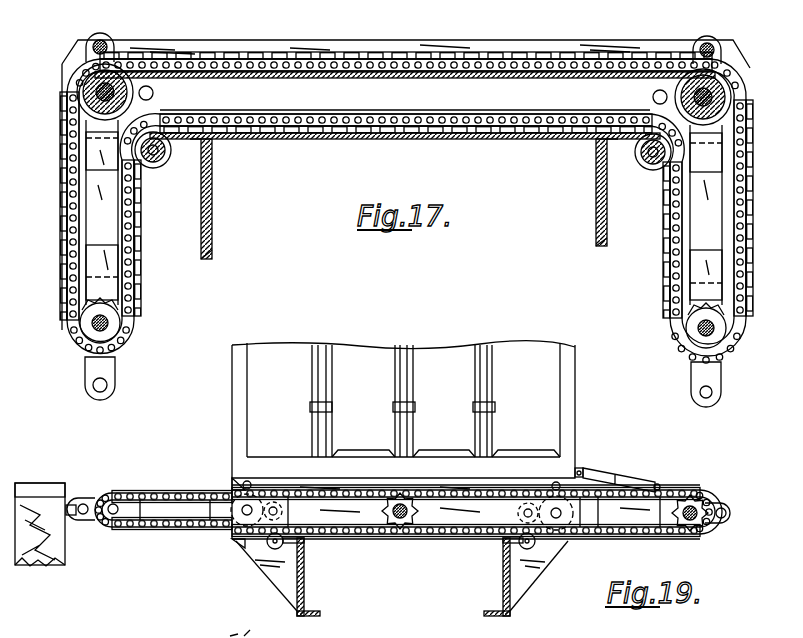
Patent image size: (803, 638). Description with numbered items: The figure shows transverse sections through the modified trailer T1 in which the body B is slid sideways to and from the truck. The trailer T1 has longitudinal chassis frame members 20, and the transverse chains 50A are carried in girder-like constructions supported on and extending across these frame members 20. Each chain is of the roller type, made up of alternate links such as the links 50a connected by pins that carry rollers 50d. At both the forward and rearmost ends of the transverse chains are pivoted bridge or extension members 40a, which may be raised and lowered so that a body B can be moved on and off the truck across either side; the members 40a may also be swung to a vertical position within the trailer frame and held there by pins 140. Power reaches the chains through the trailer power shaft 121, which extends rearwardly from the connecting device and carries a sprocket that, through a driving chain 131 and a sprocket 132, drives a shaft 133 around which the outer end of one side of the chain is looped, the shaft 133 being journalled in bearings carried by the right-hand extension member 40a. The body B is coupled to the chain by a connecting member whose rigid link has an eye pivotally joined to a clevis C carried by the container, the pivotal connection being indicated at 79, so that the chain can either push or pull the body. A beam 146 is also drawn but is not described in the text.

In FIG. 17, the chain 50A is at (418, 57).
In FIG. 19, the chain 50A is at (172, 493).
In FIG. 17, the frame beam 146 is at (540, 47).
In FIG. 17, the pin 140 is at (712, 48).
In FIG. 17, the longitudinal chassis frame member 20 is at (404, 199).
In FIG. 19, the longitudinal chassis frame member 20 is at (400, 576).
In FIG. 17, the trailer T1 is at (214, 208).
In FIG. 19, the trailer T1 is at (527, 607).
In FIG. 17, the pivoted bridge member 40a is at (120, 198).
In FIG. 19, the pivoted bridge member 40a is at (166, 527).
In FIG. 17, the shaft 133 is at (714, 332).
In FIG. 19, the trailer power shaft 121 is at (379, 536).
In FIG. 19, the driving chain 131 is at (514, 504).
In FIG. 19, the sprocket 132 is at (689, 502).
In FIG. 19, the clevis C is at (617, 448).
In FIG. 19, the pivotal connection 79 is at (587, 471).
In FIG. 19, the roller 50d is at (259, 625).
In FIG. 19, the chain link 50a is at (220, 635).
In FIG. 19, the body B is at (403, 409).